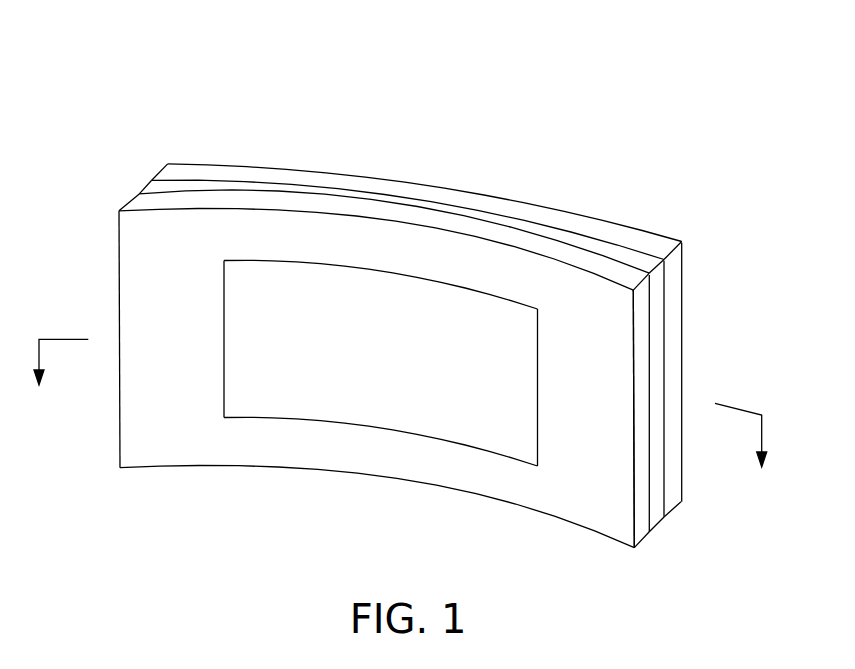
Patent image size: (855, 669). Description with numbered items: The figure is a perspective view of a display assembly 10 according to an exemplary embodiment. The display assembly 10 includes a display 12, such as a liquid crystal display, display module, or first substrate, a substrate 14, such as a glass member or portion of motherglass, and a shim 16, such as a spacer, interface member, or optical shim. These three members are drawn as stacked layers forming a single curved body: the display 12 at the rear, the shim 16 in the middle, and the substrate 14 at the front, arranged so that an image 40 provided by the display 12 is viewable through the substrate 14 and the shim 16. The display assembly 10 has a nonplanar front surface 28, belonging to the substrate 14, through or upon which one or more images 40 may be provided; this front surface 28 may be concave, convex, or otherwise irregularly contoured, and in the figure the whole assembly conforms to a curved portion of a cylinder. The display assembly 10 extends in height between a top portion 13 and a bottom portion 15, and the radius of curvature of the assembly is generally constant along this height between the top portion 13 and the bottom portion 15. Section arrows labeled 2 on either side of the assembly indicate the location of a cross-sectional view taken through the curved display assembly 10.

The display assembly 10 is at (360, 82).
The display 12 is at (585, 222).
The top portion 13 is at (417, 163).
The substrate 14 is at (640, 286).
The bottom portion 15 is at (329, 486).
The shim 16 is at (648, 266).
The front surface 28 is at (572, 410).
The image 40 is at (372, 362).
The section line 2- 2 is at (401, 416).